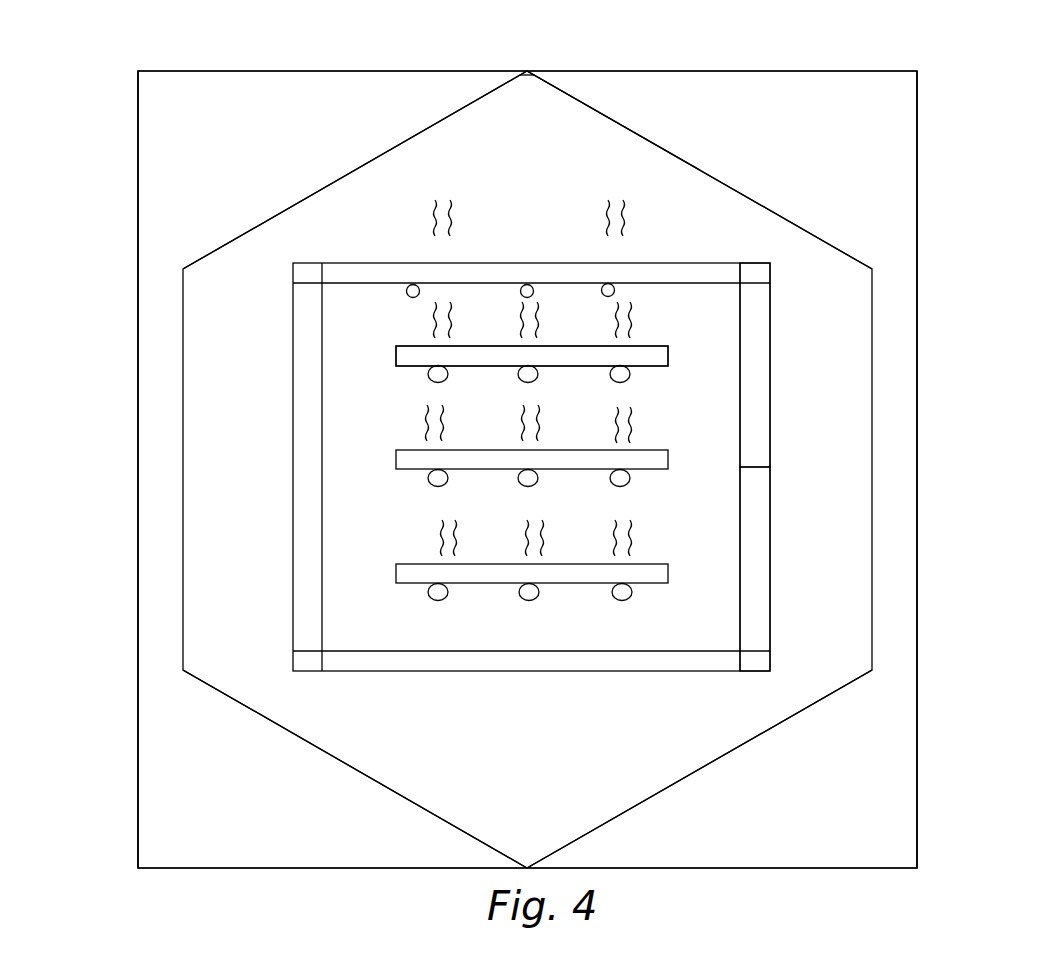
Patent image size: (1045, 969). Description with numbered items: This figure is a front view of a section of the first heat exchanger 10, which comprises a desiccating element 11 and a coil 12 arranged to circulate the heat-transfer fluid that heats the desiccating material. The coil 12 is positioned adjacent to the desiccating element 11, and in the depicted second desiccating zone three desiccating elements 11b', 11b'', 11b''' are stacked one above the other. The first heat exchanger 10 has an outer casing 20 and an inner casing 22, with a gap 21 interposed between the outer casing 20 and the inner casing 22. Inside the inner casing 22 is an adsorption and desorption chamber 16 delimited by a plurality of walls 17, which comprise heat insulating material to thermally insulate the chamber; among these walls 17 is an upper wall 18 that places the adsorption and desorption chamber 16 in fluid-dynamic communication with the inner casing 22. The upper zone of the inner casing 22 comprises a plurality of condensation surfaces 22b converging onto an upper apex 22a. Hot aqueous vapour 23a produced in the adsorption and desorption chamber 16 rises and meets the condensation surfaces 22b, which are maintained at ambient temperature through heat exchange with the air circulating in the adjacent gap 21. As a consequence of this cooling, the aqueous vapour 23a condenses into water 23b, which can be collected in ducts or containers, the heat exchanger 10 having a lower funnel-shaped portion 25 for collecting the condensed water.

The first heat exchanger 10 is at (917, 97).
The outer casing 20 is at (352, 70).
The gap 21 is at (157, 190).
The inner casing 22 is at (665, 147).
The upper apex 22a is at (528, 71).
The condensation surfaces 22b is at (367, 165).
The aqueous vapour 23a is at (428, 212).
The water 23b is at (580, 100).
The lower funnel-shaped portion 25 is at (351, 767).
The upper wall 18 is at (342, 272).
The adsorption and desorption chamber 16 is at (772, 372).
The walls 17 is at (772, 577).
The desiccating element 11 is at (672, 357).
The desiccating element 11b' is at (496, 355).
The desiccating element 11b'' is at (496, 460).
The desiccating element 11b''' is at (498, 573).
The coil 12 is at (629, 378).